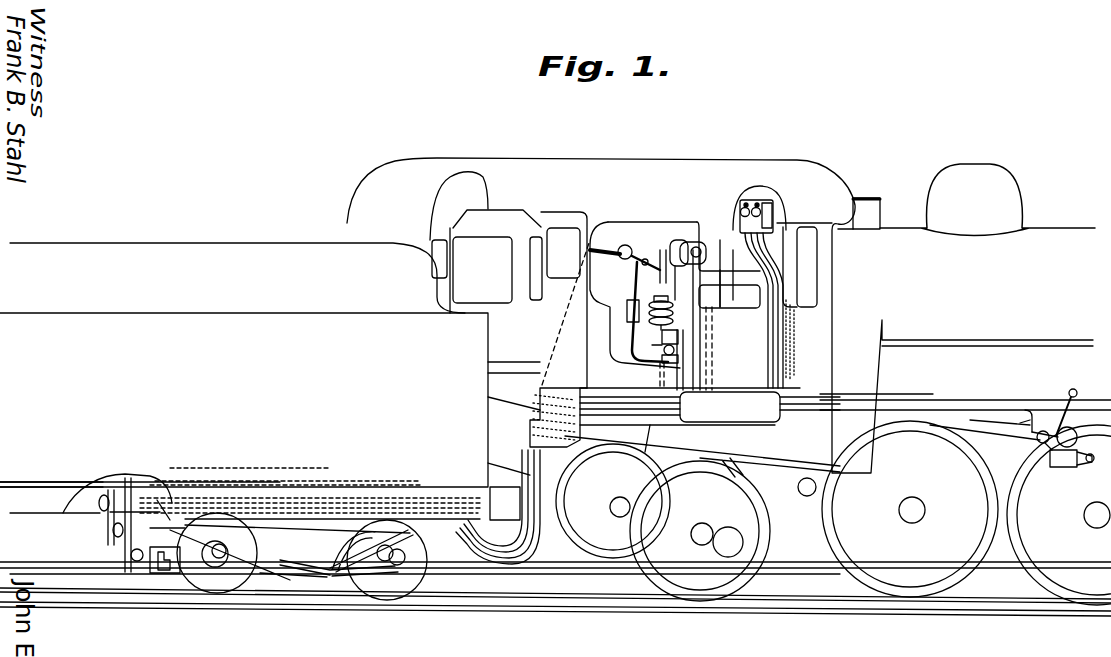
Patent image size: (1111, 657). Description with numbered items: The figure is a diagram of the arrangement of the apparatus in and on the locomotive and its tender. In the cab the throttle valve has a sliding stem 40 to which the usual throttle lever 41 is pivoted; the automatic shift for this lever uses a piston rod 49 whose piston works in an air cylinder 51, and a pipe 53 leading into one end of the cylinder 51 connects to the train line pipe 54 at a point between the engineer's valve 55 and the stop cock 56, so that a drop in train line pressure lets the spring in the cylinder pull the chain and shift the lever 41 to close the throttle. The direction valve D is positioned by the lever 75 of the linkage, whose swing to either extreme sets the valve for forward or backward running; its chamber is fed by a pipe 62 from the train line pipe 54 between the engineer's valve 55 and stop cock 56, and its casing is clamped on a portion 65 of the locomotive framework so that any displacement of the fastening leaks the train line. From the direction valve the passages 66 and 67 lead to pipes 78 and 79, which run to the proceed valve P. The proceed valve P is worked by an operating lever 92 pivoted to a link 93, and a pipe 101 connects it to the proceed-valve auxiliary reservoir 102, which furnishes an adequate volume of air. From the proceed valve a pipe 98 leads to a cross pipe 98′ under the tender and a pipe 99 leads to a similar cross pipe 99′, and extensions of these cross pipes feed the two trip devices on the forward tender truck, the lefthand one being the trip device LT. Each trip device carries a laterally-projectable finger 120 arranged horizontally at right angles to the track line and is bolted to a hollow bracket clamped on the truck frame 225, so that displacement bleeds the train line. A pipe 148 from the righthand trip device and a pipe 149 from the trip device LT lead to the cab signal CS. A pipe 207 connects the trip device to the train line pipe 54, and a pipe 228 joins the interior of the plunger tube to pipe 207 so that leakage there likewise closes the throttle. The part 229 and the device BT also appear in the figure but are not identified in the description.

The sliding stem of the throttle valve 40 is at (612, 247).
The throttle lever 41 is at (633, 260).
The piston rod 49 is at (660, 270).
The air cylinder 51 is at (537, 372).
The pipe 53 is at (620, 340).
The train line pipe 54 is at (657, 363).
The engineer's valve 55 is at (677, 315).
The stop cock 56 is at (684, 348).
The pipe 62 is at (1030, 410).
The portion of the framework of the locomotive 65 is at (1073, 467).
The passage 66 is at (1047, 430).
The passage 67 is at (1050, 457).
The lever of the linkage 75 is at (1075, 395).
The pipe 78 is at (733, 250).
The pipe 79 is at (720, 270).
The operating lever 92 is at (664, 275).
The link 93 is at (676, 240).
The pipe 98 is at (712, 285).
The cross pipe 98′ is at (107, 497).
The pipe 99 is at (147, 500).
The cross pipe 99′ is at (113, 497).
The pipe 101 is at (780, 280).
The proceed-valve auxiliary reservoir 102 is at (730, 407).
The laterally-projectable finger 120 is at (80, 525).
The pipe 148 is at (747, 243).
The pipe 149 is at (758, 240).
The pipe 207 is at (130, 497).
The truck frame 225 is at (303, 523).
The pipe 228 is at (187, 510).
The cable 229 is at (260, 493).
The proceed valve P is at (697, 242).
The cab signal CS is at (757, 193).
The direction valve D is at (1077, 424).
The battery BT is at (163, 573).
The lefthand trip device LT is at (260, 573).